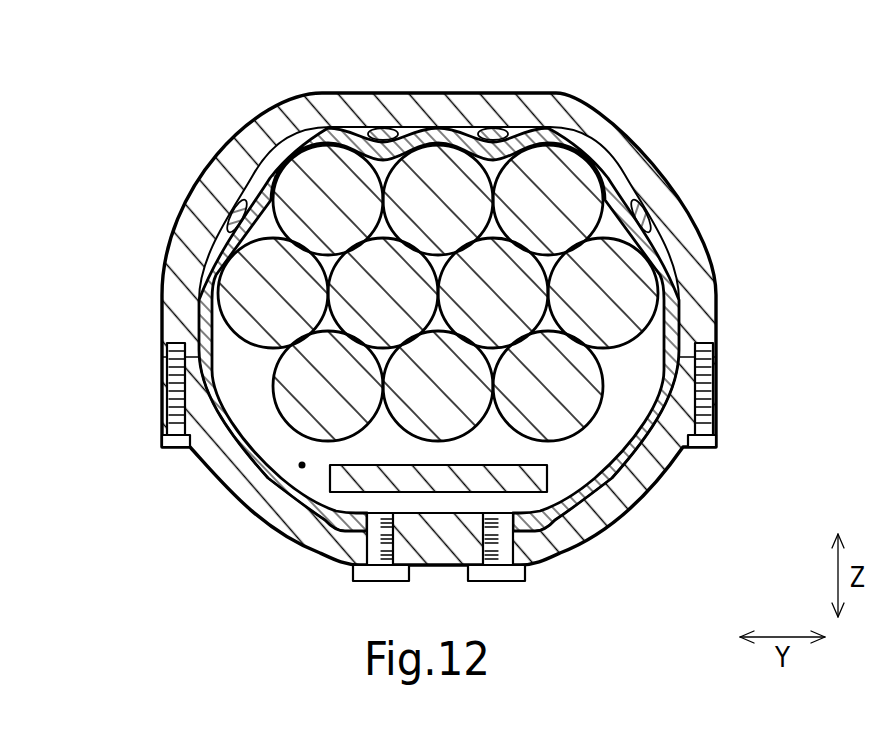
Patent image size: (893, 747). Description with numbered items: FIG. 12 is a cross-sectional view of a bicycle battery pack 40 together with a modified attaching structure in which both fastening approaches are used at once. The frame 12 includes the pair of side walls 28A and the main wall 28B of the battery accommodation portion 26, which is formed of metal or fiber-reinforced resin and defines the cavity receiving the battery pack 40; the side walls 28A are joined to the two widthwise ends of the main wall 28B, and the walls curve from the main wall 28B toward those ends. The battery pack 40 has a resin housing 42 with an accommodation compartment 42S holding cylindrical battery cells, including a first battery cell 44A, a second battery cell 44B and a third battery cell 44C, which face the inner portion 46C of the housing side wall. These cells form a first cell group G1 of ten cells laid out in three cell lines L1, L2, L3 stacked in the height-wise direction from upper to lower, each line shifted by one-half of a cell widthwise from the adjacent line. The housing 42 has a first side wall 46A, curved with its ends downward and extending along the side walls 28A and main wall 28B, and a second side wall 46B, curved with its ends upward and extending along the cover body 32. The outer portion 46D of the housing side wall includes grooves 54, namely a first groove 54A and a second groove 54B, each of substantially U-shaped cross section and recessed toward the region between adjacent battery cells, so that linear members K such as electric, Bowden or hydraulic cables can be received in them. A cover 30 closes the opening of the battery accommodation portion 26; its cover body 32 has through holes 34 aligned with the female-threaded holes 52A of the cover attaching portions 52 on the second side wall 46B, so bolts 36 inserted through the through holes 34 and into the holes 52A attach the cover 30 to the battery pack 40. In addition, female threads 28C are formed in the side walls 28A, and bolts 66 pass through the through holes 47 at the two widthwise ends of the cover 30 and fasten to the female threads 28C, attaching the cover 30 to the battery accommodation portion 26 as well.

The frame 12 is at (716, 334).
The battery accommodation portion 26 is at (618, 128).
The side walls 28A is at (177, 278).
The main wall 28B is at (440, 103).
The female threads 28C is at (164, 357).
The cover 30 is at (696, 456).
The cover body 32 is at (595, 522).
The through holes 34 is at (390, 562).
The bolts 36 is at (368, 581).
The battery pack 40 is at (692, 236).
The housing 42 is at (614, 160).
The accommodation compartment 42S is at (302, 465).
The first battery cell 44A is at (263, 135).
The second battery cell 44B is at (404, 131).
The third battery cell 44C is at (602, 126).
The first side wall 46A is at (676, 268).
The second side wall 46B is at (617, 457).
The inner portion 46C is at (298, 505).
The outer portion 46D is at (277, 148).
The through holes 47 is at (167, 401).
The cover attaching portion 52 is at (428, 581).
The holes 52A is at (370, 545).
The groove 54 is at (229, 222).
The first groove 54A is at (370, 130).
The second groove 54B is at (513, 128).
The bolts 66 is at (170, 447).
The first cell group G1 is at (617, 397).
The linear member K is at (502, 129).
The first cell line L1 is at (258, 186).
The second cell line L2 is at (207, 306).
The third cell line L3 is at (272, 417).